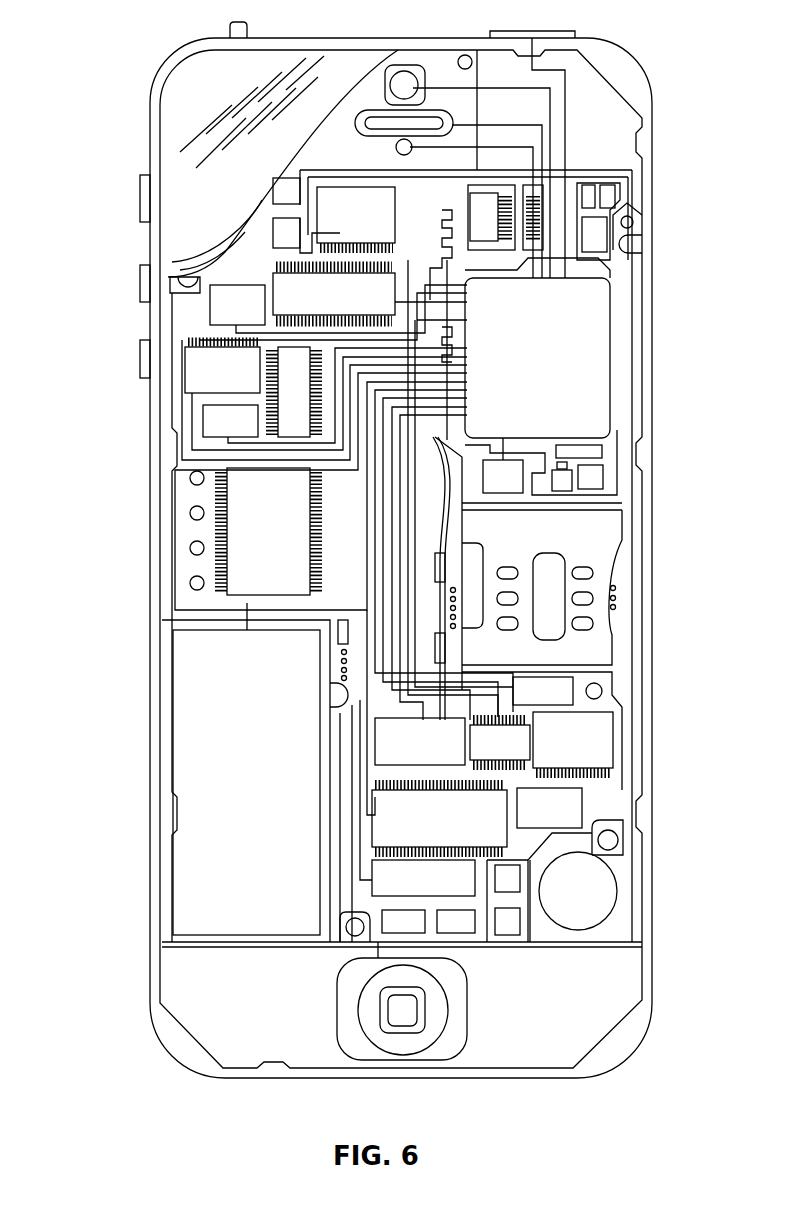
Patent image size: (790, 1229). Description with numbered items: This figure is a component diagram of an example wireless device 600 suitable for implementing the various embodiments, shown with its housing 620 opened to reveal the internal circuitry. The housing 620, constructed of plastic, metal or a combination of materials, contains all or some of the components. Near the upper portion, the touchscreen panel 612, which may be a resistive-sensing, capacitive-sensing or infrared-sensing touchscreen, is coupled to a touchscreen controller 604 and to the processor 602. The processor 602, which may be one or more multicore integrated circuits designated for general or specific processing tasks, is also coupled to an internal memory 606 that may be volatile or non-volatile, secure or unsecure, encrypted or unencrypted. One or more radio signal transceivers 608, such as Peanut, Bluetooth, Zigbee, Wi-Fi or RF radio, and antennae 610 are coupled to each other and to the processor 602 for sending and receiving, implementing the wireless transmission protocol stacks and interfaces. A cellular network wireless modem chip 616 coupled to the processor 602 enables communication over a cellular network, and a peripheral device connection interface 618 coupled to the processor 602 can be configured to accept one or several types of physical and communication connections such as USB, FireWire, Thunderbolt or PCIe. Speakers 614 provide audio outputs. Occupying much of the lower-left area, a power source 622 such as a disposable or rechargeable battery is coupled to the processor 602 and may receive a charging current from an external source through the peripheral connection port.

The wireless device 600 is at (126, 70).
The processor 602 is at (396, 489).
The touchscreen controller 604 is at (334, 211).
The internal memory 606 is at (333, 303).
The radio signal transceivers 608 is at (570, 198).
The antennae 610 is at (607, 238).
The touchscreen panel 612 is at (173, 137).
The speakers 614 is at (367, 110).
The cellular network wireless modem chip 616 is at (439, 818).
The peripheral device connection interface 618 is at (423, 878).
The housing 620 is at (653, 960).
The power source 622 is at (246, 782).